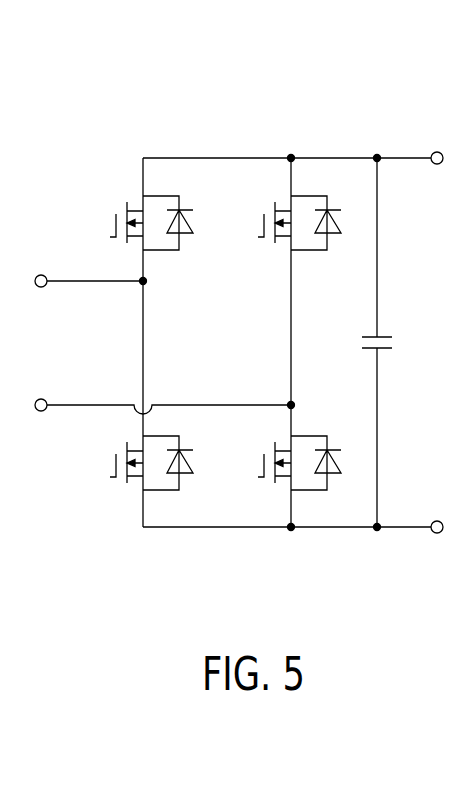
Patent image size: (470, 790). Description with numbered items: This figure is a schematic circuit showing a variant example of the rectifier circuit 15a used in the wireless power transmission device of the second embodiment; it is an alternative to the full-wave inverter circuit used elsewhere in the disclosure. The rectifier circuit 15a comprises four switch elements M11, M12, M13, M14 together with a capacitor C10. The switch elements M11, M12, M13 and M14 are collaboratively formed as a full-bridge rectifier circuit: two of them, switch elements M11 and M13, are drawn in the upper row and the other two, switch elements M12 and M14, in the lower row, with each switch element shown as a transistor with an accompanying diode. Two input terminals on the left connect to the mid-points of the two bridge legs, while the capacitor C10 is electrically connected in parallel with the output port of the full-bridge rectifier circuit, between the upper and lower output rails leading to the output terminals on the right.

The rectifier circuit 15a is at (436, 81).
The switch element M11 is at (129, 223).
The switch element M12 is at (129, 463).
The switch element M13 is at (277, 223).
The switch element M14 is at (277, 463).
The capacitor C10 is at (397, 324).